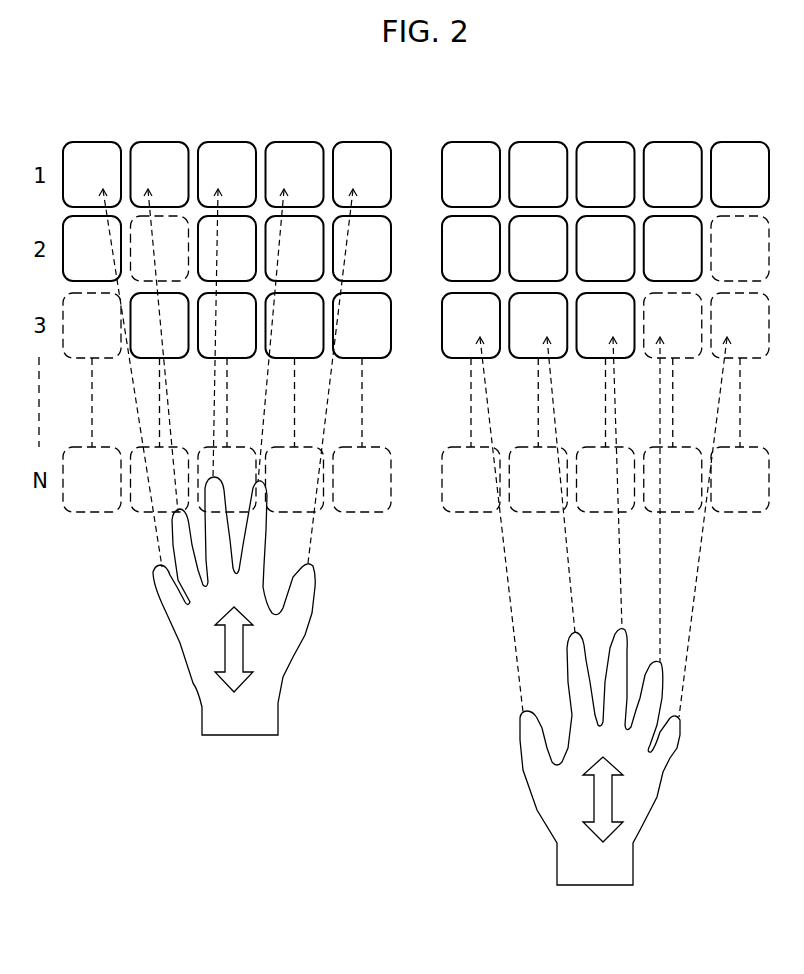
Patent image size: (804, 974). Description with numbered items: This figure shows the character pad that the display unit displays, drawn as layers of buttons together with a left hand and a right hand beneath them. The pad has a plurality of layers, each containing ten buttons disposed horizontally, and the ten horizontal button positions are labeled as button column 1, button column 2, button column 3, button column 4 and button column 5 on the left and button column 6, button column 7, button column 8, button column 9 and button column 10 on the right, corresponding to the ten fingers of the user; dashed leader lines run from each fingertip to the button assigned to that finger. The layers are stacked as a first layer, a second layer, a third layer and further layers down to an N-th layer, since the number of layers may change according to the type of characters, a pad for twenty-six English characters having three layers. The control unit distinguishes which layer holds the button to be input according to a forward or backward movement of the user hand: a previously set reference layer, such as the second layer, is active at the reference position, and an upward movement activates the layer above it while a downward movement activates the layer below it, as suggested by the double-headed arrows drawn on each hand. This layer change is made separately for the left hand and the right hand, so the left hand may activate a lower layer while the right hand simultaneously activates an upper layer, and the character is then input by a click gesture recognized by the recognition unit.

The key column 1 is at (92, 306).
The key column 2 is at (160, 306).
The key column 3 is at (227, 306).
The key column 4 is at (295, 306).
The key column 5 is at (362, 306).
The key column 6 is at (471, 306).
The key column 7 is at (538, 306).
The key column 8 is at (606, 306).
The key column 9 is at (673, 306).
The key column 10 is at (740, 306).